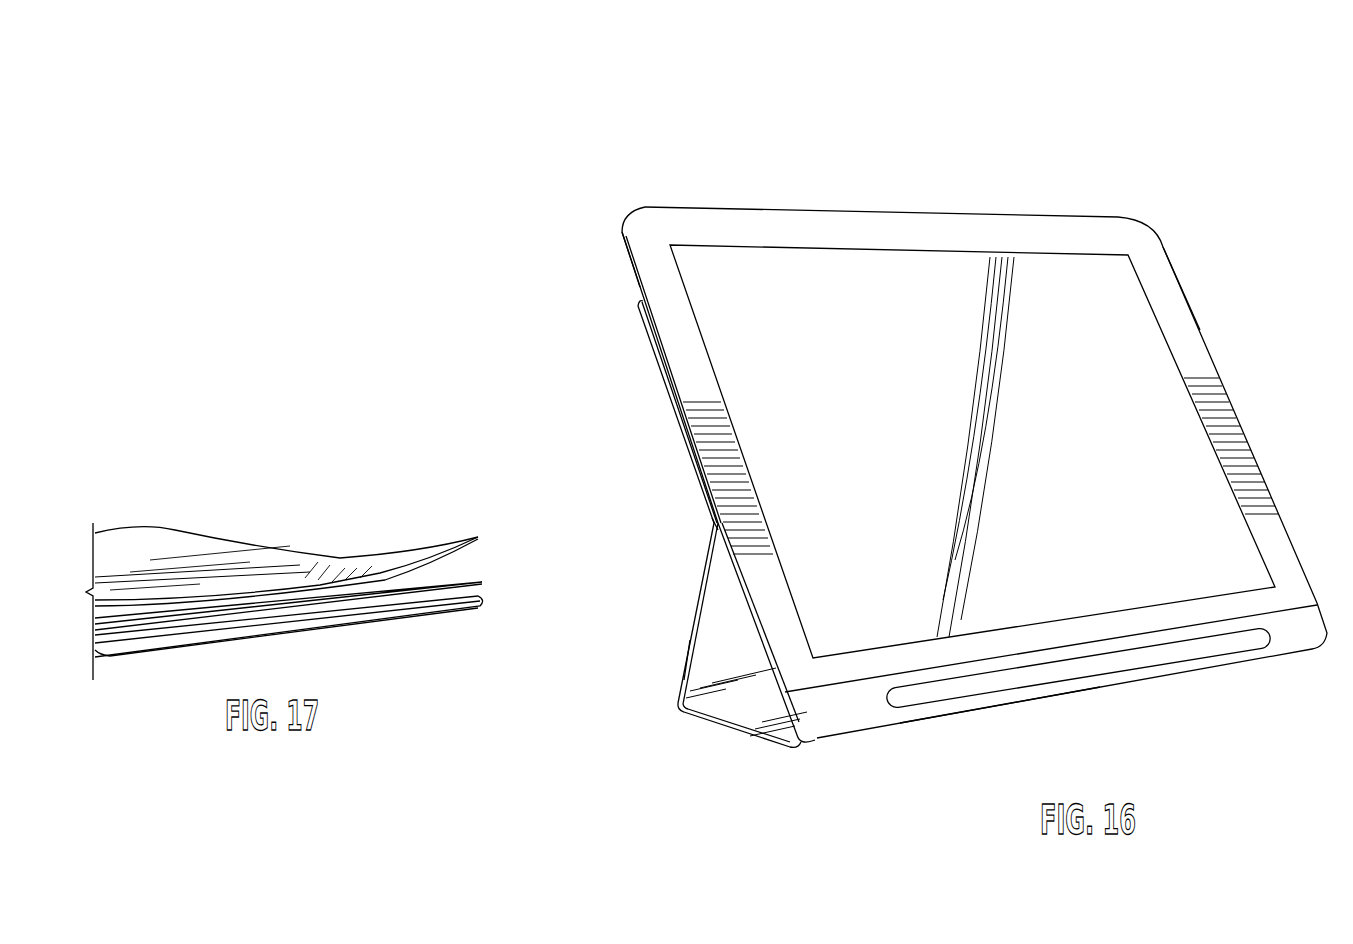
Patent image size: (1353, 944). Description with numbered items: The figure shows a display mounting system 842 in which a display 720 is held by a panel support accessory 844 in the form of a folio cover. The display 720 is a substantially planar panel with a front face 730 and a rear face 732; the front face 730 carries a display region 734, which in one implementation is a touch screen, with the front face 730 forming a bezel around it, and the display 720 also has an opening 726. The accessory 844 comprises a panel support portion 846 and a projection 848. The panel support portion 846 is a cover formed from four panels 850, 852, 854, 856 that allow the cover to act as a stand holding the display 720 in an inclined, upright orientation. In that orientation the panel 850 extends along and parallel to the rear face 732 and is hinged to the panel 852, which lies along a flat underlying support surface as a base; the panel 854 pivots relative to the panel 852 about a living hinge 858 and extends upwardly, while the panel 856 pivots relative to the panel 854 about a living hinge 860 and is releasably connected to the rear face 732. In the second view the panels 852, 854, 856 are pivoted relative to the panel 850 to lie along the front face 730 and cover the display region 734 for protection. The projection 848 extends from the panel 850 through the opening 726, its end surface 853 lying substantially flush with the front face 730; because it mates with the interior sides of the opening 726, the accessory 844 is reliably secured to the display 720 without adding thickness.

In FIG. 16, the display 720 is at (1118, 217).
In FIG. 17, the display 720 is at (385, 622).
In FIG. 16, the opening 726 is at (1153, 660).
In FIG. 16, the front face 730 is at (1212, 305).
In FIG. 16, the rear face 732 is at (617, 260).
In FIG. 16, the display region 734 is at (1056, 387).
In FIG. 17, the display region 734 is at (437, 582).
In FIG. 16, the display mounting system 842 is at (800, 452).
In FIG. 17, the display mounting system 842 is at (286, 520).
In FIG. 16, the panel support accessory 844 is at (681, 665).
In FIG. 17, the panel support accessory 844 is at (226, 540).
In FIG. 16, the panel support portion 846 is at (681, 637).
In FIG. 16, the projection 848 is at (952, 708).
In FIG. 16, the panel 850 is at (1017, 703).
In FIG. 16, the panel 852 is at (770, 740).
In FIG. 16, the end surface 853 is at (1218, 648).
In FIG. 16, the panel 854 is at (686, 601).
In FIG. 16, the panel 856 is at (668, 398).
In FIG. 16, the living hinge 858 is at (678, 707).
In FIG. 16, the living hinge 860 is at (711, 527).